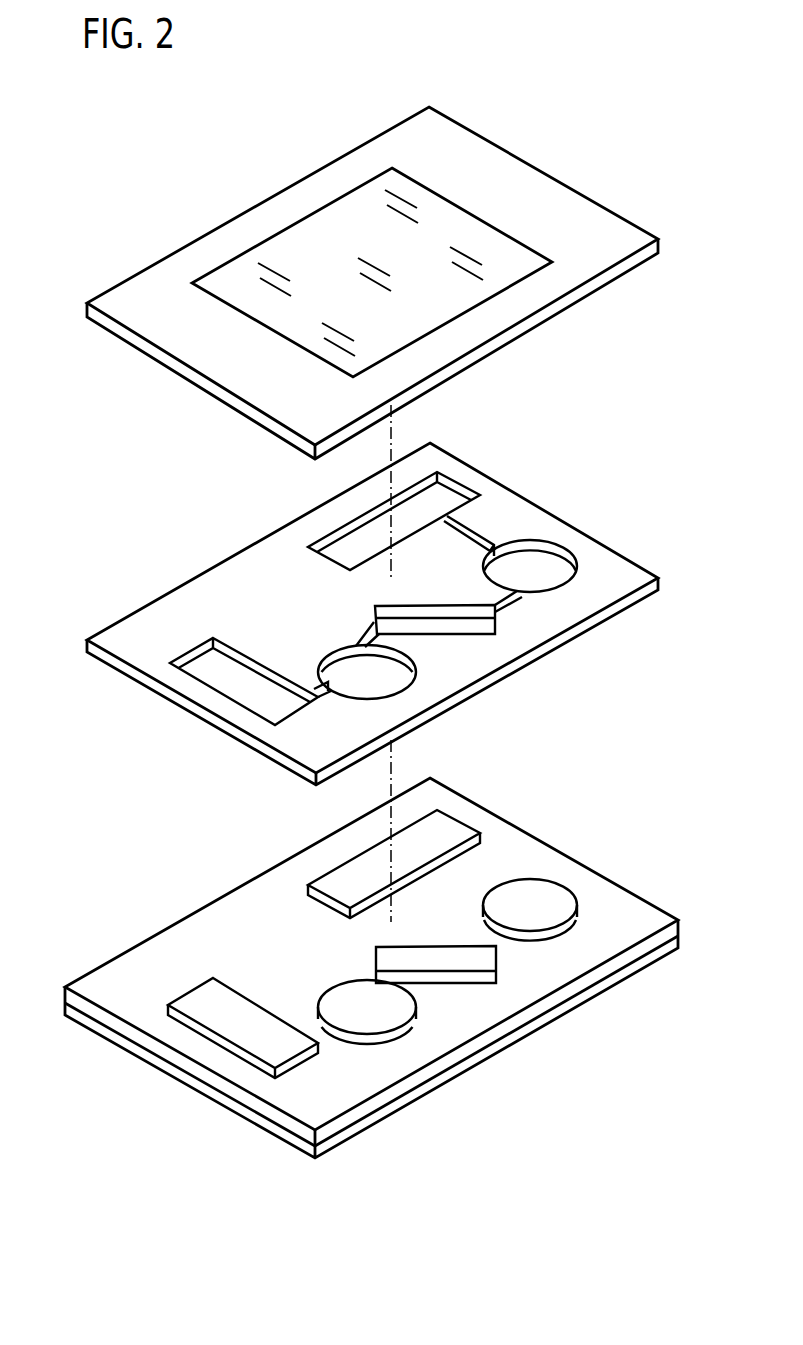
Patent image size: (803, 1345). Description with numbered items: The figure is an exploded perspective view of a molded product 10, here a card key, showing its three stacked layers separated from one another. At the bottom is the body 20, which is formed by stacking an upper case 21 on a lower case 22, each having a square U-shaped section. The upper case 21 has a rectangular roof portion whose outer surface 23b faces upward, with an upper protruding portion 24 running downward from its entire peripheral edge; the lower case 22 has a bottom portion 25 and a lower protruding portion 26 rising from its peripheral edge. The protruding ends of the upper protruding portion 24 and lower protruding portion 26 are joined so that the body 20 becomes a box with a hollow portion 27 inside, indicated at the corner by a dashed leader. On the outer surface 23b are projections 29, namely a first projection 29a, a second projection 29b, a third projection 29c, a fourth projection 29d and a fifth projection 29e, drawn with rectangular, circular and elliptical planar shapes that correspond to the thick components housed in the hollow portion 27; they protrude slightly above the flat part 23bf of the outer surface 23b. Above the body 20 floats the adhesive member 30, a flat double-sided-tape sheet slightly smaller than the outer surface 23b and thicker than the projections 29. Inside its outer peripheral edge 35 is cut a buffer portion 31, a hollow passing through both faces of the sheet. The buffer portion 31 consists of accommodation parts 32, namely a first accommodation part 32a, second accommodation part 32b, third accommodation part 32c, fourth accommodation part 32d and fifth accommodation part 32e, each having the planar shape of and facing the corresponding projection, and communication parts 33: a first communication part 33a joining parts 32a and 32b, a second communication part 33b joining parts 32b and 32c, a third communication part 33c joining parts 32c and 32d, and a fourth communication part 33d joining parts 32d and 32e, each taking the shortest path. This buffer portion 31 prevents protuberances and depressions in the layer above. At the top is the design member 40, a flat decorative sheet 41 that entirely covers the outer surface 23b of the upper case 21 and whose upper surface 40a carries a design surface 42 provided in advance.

The molded product 10 is at (266, 94).
The body 20 is at (148, 900).
The upper case 21 is at (222, 893).
The lower case 22 is at (90, 1028).
The outer surface 23b is at (502, 847).
The flat part 23bf is at (296, 878).
The upper protruding portion 24 is at (632, 957).
The bottom portion 25 is at (355, 1137).
The lower protruding portion 26 is at (593, 1003).
The hollow portion 27 is at (117, 981).
The projections 29 is at (398, 939).
The first projection 29a is at (437, 823).
The second projection 29b is at (552, 895).
The third projection 29c is at (457, 968).
The fourth projection 29d is at (412, 1035).
The fifth projection 29e is at (203, 1013).
The adhesive member 30 is at (158, 565).
The buffer portion 31 is at (320, 522).
The accommodation parts 32 is at (363, 571).
The first accommodation part 32a is at (447, 482).
The second accommodation part 32b is at (548, 548).
The third accommodation part 32c is at (462, 630).
The fourth accommodation part 32d is at (357, 650).
The fifth accommodation part 32e is at (170, 652).
The communication parts 33 is at (425, 628).
The first communication part 33a is at (473, 528).
The second communication part 33b is at (513, 597).
The third communication part 33c is at (362, 645).
The fourth communication part 33d is at (332, 698).
The outer peripheral edge 35 is at (225, 557).
The design member 40 is at (209, 204).
The upper surface 40a is at (483, 148).
The decorative sheet 41 is at (296, 183).
The design surface 42 is at (500, 250).